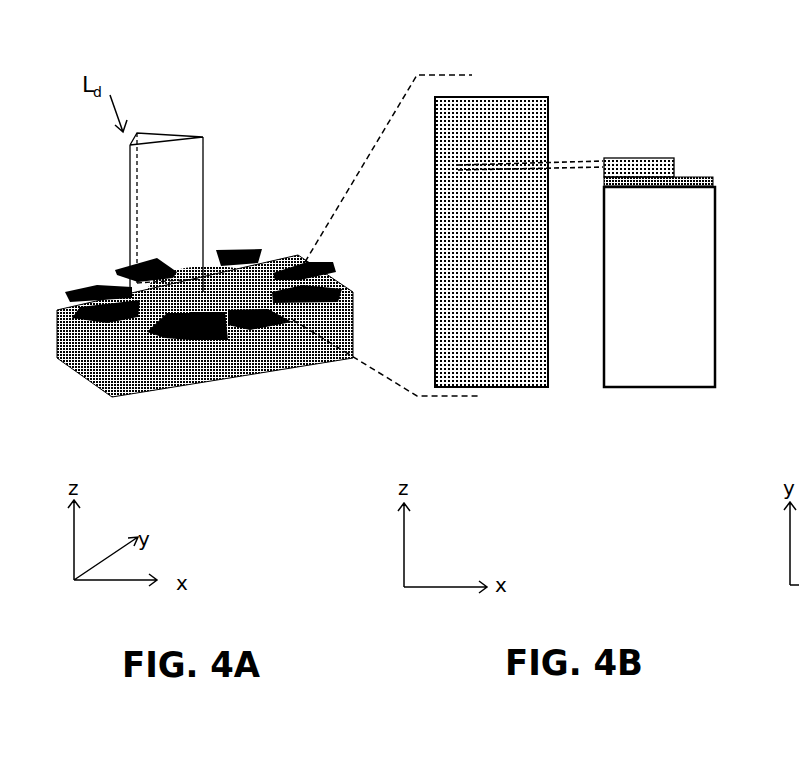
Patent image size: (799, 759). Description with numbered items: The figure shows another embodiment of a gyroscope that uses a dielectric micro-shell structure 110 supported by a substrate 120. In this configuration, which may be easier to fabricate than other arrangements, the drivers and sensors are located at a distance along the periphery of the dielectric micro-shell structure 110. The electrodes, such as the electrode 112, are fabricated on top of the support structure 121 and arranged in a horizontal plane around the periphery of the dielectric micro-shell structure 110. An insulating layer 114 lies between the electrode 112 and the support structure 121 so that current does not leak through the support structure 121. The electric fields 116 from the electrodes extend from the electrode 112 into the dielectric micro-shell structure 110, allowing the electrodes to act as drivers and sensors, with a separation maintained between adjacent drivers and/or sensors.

In FIG. 4A, the dielectric micro-shell structure 110 is at (223, 283).
In FIG. 4B, the dielectric micro-shell structure 110 is at (463, 107).
In FIG. 4B, the electrode 112 is at (637, 165).
In FIG. 4B, the insulating layer 114 is at (663, 182).
In FIG. 4B, the electric fields 116 is at (568, 158).
In FIG. 4A, the substrate 120 is at (227, 368).
In FIG. 4B, the support structure 121 is at (648, 257).